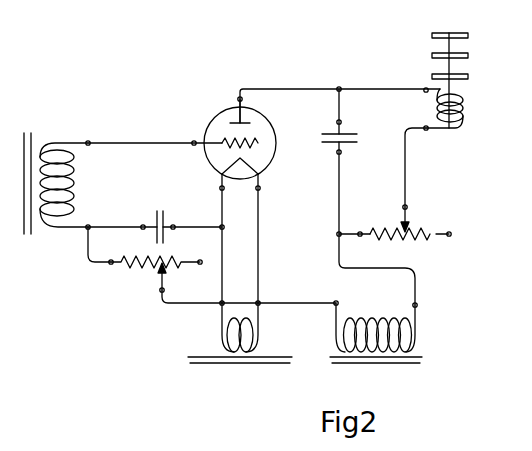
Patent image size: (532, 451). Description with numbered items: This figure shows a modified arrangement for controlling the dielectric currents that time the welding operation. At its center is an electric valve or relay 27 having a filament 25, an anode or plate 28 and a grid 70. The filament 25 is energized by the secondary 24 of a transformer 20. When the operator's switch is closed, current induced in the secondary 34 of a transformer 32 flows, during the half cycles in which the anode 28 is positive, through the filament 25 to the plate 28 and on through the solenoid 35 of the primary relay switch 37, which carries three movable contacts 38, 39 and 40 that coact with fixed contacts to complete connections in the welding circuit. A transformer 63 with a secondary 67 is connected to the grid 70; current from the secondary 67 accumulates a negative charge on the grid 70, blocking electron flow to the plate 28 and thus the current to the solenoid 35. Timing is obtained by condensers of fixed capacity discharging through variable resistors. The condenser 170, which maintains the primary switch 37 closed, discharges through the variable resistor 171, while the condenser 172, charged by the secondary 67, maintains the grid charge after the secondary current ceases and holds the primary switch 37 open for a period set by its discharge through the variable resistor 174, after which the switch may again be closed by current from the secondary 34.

The transformer 20 is at (241, 344).
The secondary 24 is at (234, 320).
The filament 25 is at (255, 165).
The electric valve 27 is at (236, 137).
The anode 28 is at (246, 120).
The transformer 32 is at (389, 344).
The secondary 34 is at (377, 320).
The solenoid 35 is at (440, 108).
The primary relay switch 37 is at (473, 80).
The movable contact 38 is at (468, 77).
The movable contact 39 is at (468, 56).
The movable contact 40 is at (468, 36).
The transformer 63 is at (38, 202).
The secondary 67 is at (76, 183).
The grid 70 is at (224, 147).
The condenser 170 is at (348, 134).
The variable resistor 171 is at (393, 230).
The condenser 172 is at (166, 219).
The variable resistor 174 is at (169, 262).